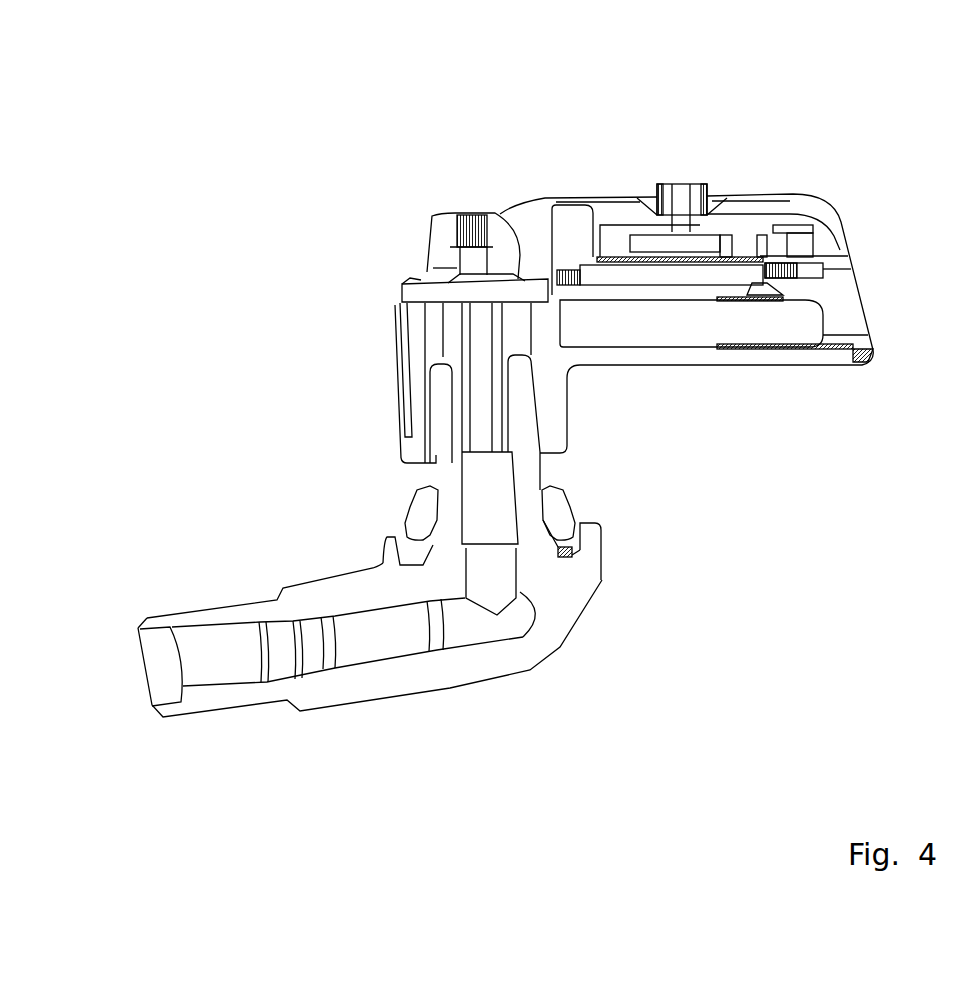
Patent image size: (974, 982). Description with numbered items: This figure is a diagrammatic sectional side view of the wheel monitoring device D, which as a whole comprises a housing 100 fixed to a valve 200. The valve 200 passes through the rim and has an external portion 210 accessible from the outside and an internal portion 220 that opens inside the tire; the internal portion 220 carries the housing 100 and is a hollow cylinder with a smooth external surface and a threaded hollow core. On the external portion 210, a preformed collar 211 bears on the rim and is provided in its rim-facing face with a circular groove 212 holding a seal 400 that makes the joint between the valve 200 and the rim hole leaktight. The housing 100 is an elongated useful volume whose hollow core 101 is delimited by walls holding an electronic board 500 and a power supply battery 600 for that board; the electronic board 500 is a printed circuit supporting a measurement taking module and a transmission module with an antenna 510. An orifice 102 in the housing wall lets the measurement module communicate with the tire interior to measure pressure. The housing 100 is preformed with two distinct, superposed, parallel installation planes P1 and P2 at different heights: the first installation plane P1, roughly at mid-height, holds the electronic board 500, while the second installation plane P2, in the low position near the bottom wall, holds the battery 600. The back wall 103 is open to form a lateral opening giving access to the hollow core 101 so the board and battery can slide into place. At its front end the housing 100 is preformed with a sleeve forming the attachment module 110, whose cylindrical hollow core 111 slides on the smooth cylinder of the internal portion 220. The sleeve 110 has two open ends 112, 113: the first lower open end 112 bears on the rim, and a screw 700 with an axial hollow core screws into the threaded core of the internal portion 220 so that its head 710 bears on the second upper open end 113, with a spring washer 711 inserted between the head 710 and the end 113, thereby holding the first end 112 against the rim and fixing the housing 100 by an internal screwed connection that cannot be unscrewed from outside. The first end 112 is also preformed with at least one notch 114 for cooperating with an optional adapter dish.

The housing 100 is at (747, 203).
The hollow core 101 is at (848, 302).
The orifice 102 is at (677, 197).
The back wall 103 is at (863, 320).
The attachment module 110 is at (417, 350).
The cylindrical hollow core 111 is at (439, 353).
The first lower open end 112 is at (413, 462).
The second upper open end 113 is at (447, 303).
The notch 114 is at (403, 417).
The valve 200 is at (582, 685).
The external portion 210 is at (368, 703).
The collar 211 is at (595, 532).
The circular groove 212 is at (566, 552).
The internal portion 220 is at (527, 472).
The seal 400 is at (565, 512).
The electronic board 500 is at (800, 272).
The antenna 510 is at (800, 232).
The power supply battery 600 is at (765, 333).
The screw 700 is at (418, 227).
The head 710 is at (481, 247).
The spring washer 711 is at (413, 283).
The first installation plane P1 is at (840, 264).
The second installation plane P2 is at (873, 360).
The wheel monitoring device D is at (598, 172).